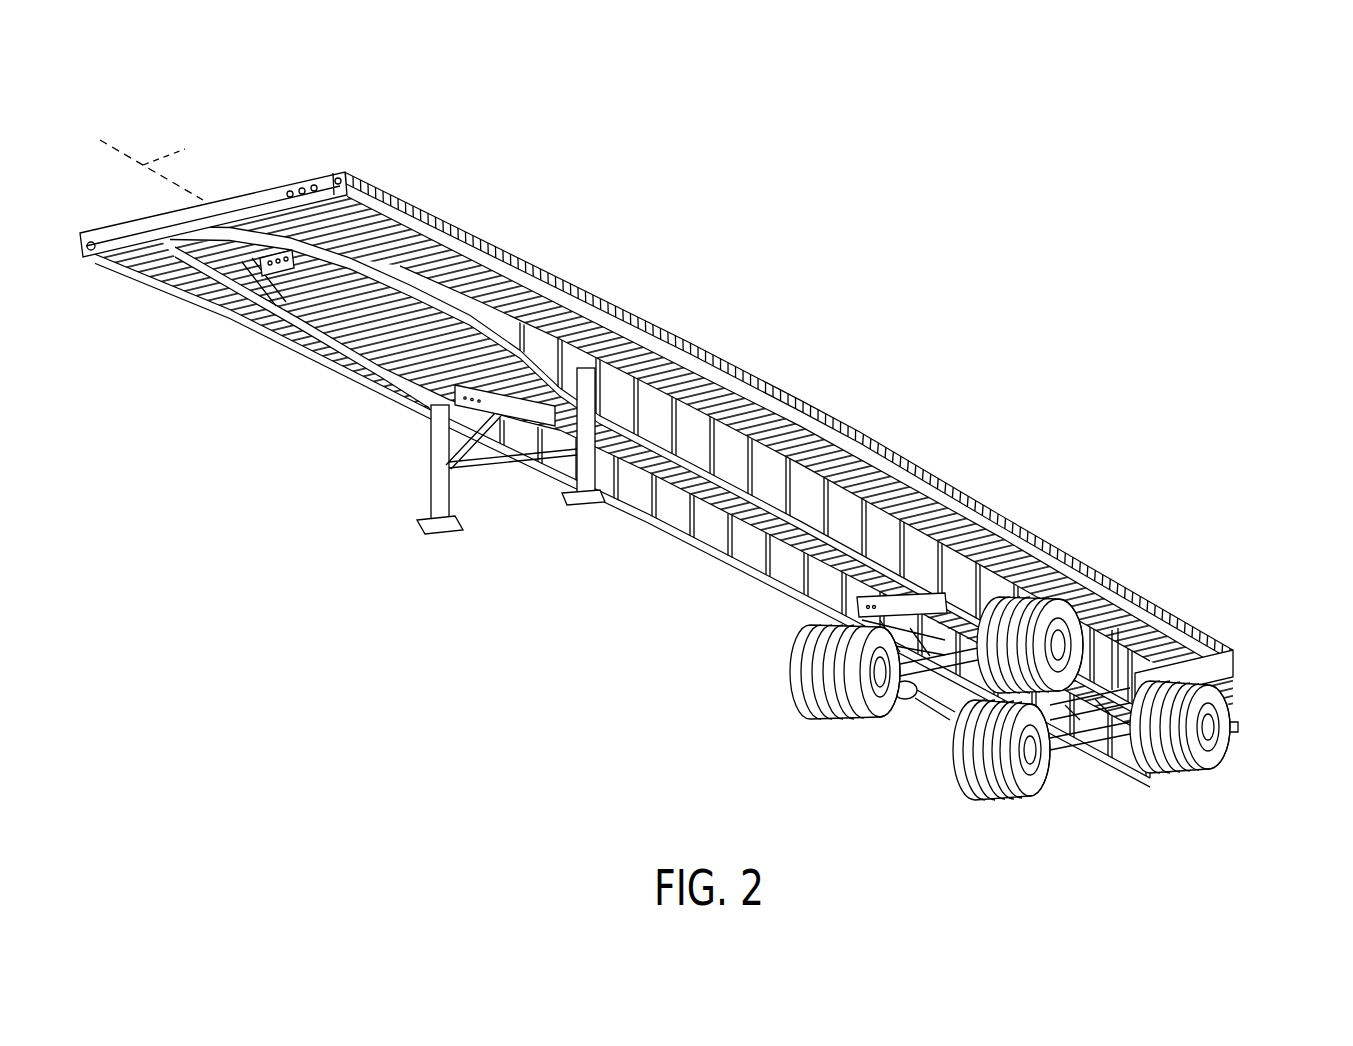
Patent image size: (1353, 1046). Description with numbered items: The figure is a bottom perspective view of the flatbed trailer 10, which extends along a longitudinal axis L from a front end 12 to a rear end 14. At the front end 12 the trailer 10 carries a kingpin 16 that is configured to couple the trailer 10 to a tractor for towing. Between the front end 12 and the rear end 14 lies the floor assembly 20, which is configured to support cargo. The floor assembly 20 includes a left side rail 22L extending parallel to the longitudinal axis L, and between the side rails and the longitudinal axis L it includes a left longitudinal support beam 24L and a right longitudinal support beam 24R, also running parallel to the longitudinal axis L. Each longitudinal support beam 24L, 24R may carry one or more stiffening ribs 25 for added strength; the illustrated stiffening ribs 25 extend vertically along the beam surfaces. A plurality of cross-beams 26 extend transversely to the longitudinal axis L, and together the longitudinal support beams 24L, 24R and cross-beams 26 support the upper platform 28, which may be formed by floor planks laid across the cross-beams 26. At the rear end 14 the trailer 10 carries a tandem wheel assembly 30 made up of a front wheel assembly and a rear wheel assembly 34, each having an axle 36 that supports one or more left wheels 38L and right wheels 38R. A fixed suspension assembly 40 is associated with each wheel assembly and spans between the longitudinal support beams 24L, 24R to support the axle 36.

The trailer 10 is at (703, 454).
The front end 12 is at (341, 160).
The rear end 14 is at (1275, 637).
The kingpin 16 is at (283, 332).
The floor assembly 20 is at (703, 454).
The left side rail 22L is at (850, 428).
The left longitudinal support beam 24L is at (722, 452).
The right longitudinal support beam 24R is at (648, 518).
The stiffening ribs 25 is at (768, 553).
The cross-beams 26 is at (668, 366).
The platform 28 is at (540, 266).
The tandem wheel assembly 30 is at (975, 723).
The rear wheel assembly 34 is at (1118, 785).
The axle 36 is at (975, 704).
The left wheels 38L is at (988, 672).
The right wheels 38R is at (800, 698).
The suspension assembly 40 is at (812, 617).
The longitudinal axis L is at (151, 168).